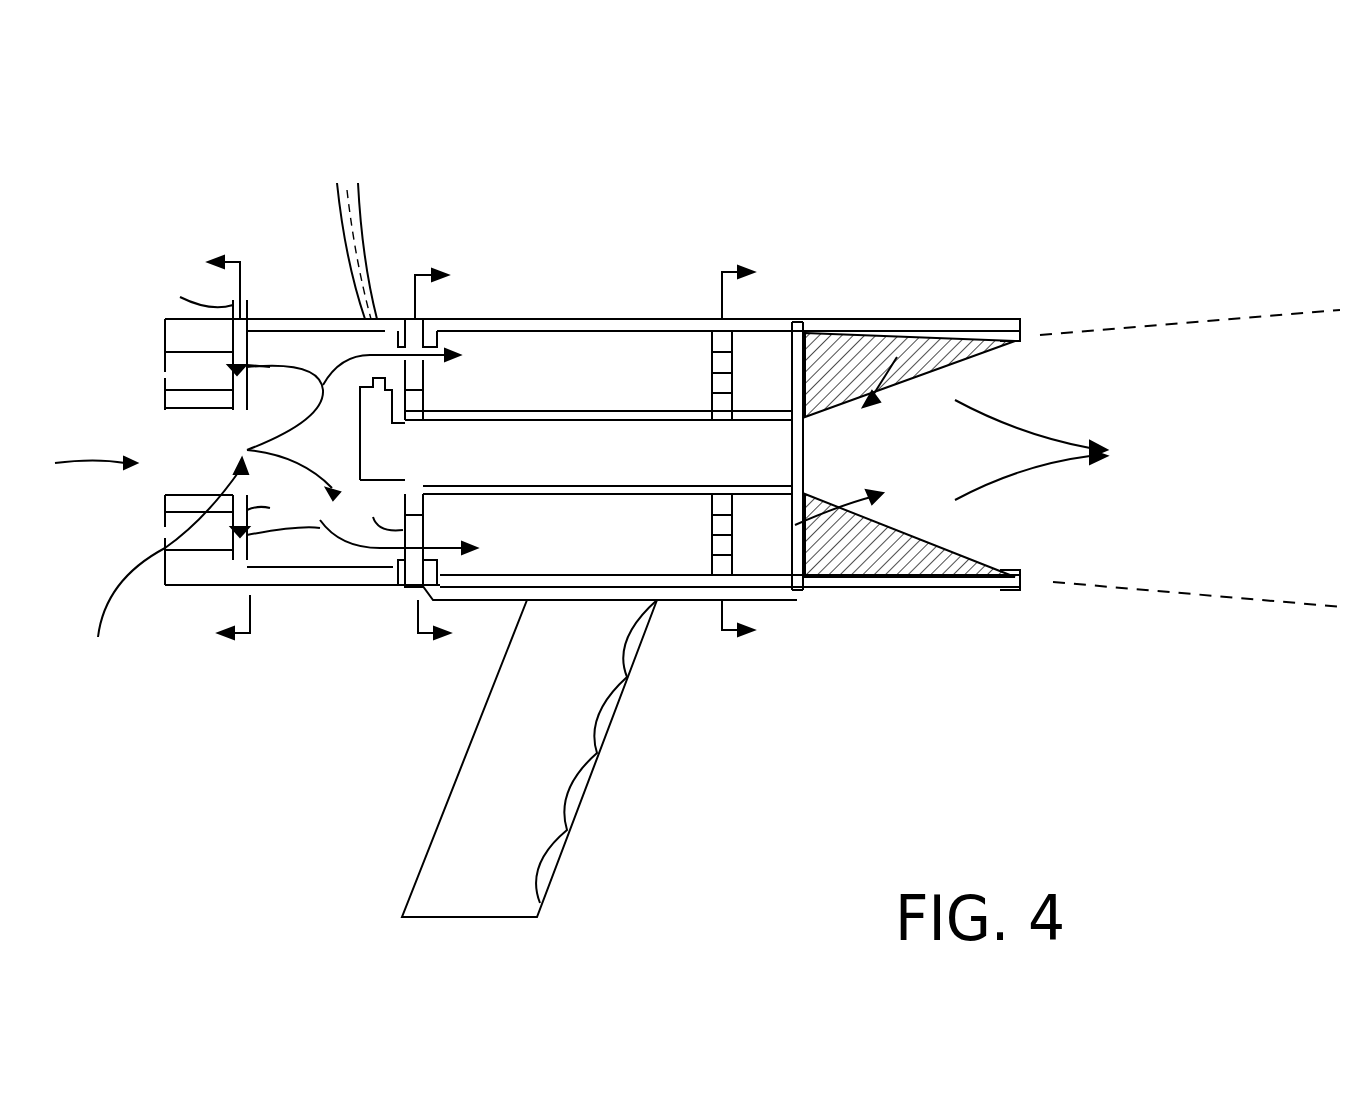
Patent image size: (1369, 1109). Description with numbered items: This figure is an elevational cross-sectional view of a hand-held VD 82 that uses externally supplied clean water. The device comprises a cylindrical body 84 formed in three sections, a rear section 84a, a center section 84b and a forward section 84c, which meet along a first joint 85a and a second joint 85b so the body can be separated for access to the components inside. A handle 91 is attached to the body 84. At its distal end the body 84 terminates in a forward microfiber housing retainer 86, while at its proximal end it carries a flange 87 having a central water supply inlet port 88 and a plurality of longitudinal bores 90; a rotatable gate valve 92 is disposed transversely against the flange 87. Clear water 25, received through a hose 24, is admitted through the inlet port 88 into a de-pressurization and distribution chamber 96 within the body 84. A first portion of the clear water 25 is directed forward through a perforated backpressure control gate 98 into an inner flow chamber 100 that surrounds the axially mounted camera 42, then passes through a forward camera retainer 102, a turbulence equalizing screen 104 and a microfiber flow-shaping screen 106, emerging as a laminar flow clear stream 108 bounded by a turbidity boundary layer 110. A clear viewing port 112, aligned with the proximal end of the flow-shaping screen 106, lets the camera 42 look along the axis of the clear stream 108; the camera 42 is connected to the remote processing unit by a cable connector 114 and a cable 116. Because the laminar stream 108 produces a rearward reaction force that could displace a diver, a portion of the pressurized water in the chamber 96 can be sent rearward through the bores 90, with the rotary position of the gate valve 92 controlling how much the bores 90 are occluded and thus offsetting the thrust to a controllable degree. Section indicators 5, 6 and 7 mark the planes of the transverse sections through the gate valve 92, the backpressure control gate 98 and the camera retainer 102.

The hose 24 is at (96, 439).
The clear water 25 is at (166, 568).
The camera 42 is at (570, 474).
The section line 5- 5 is at (229, 454).
The section line 6- 6 is at (432, 460).
The section line 7- 7 is at (738, 454).
The hand-held VD 82 is at (852, 188).
The cylindrical body 84 is at (657, 318).
The rear section 84a is at (313, 593).
The center section 84b is at (510, 319).
The forward section 84c is at (863, 318).
The first joint 85a is at (383, 592).
The second joint 85b is at (790, 588).
The forward microfiber housing retainer 86 is at (917, 318).
The flange 87 is at (173, 342).
The central water supply inlet port 88 is at (249, 450).
The longitudinal bores 90 is at (247, 388).
The handle 91 is at (540, 771).
The rotatable gate valve 92 is at (242, 310).
The de-pressurization and distribution chamber 96 is at (353, 424).
The perforated backpressure control gate 98 is at (398, 519).
The inner flow chamber 100 is at (572, 398).
The forward camera retainer 102 is at (720, 345).
The turbulence equalizing screen 104 is at (762, 453).
The microfiber flow-shaping screen 106 is at (695, 362).
The laminar flow clear stream 108 is at (1170, 473).
The turbidity boundary layer 110 is at (1297, 312).
The clear viewing port 112 is at (805, 460).
The cable connector 114 is at (385, 448).
The cable 116 is at (362, 242).